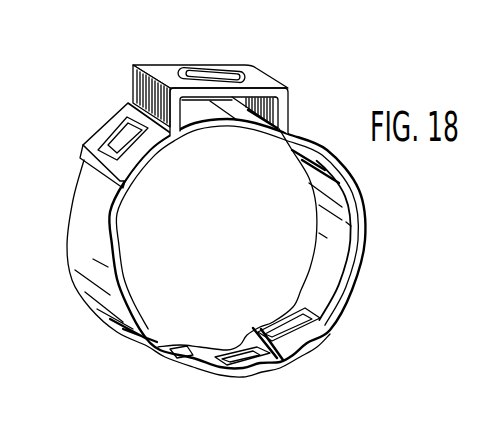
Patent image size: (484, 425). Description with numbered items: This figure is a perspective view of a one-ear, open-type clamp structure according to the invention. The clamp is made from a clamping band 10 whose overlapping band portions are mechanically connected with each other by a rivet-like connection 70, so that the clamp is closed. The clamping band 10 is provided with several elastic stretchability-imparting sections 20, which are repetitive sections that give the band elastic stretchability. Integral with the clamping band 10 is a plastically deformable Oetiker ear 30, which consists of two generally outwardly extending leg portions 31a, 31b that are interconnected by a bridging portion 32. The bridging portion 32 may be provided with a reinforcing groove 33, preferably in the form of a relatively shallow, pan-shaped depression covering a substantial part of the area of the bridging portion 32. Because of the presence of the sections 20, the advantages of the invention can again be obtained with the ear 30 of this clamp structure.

The clamping band 10 is at (82, 226).
The elastic stretchability-imparting section 20 is at (313, 355).
The Oetiker ear 30 is at (195, 76).
The leg portion 31a is at (137, 78).
The leg portion 31b is at (289, 100).
The bridging portion 32 is at (255, 80).
The reinforcing groove 33 is at (203, 70).
The rivet-like connection 70 is at (110, 136).